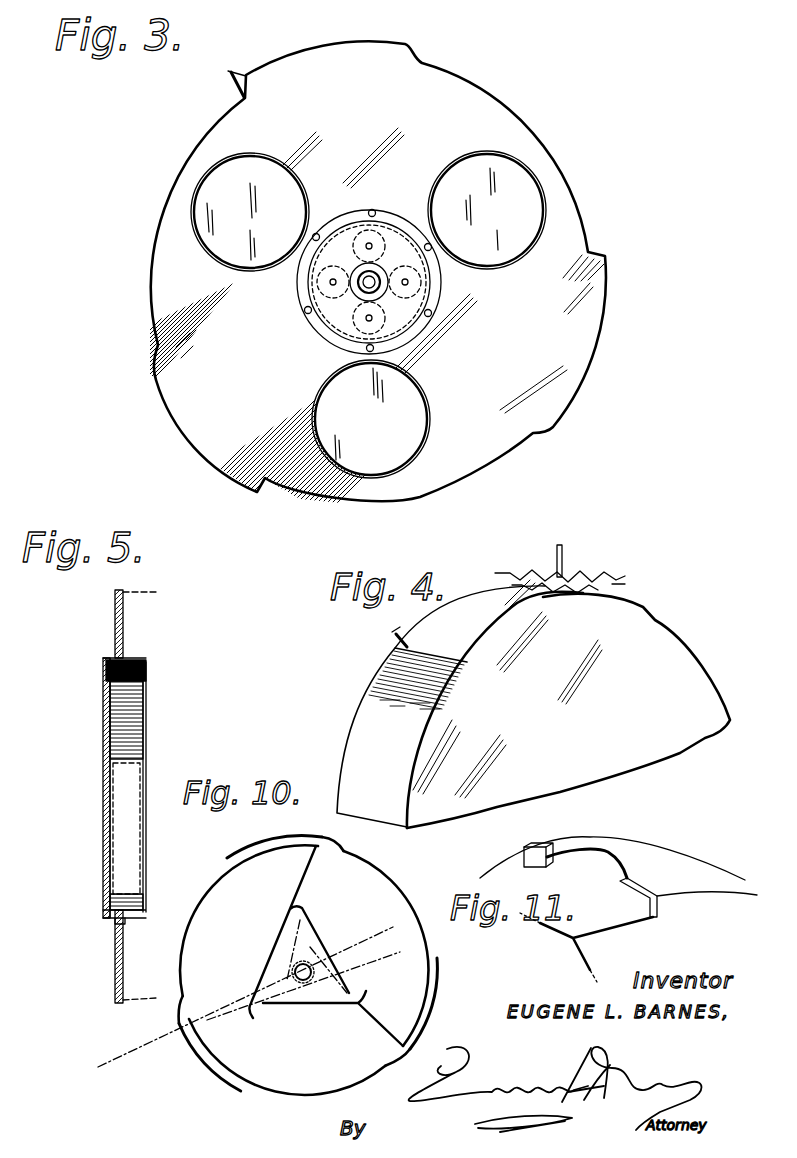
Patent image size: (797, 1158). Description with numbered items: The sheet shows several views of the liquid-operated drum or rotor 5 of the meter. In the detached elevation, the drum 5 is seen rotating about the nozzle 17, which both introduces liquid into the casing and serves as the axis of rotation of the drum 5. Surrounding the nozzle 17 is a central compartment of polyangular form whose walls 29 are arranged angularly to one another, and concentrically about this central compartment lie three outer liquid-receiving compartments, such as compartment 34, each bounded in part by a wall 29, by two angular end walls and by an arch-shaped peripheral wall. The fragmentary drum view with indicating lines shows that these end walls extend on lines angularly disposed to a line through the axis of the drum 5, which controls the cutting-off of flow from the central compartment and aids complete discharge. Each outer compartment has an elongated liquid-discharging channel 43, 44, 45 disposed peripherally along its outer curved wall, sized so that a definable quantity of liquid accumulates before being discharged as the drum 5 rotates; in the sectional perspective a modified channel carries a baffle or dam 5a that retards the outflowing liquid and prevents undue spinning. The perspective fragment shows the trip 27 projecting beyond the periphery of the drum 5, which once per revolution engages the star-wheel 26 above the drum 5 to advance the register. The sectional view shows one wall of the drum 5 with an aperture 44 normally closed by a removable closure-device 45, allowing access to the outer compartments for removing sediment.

In FIG. 3, the drum or rotor 5 is at (353, 280).
In FIG. 5, the drum or rotor 5 is at (113, 630).
In FIG. 4, the drum or rotor 5 is at (533, 704).
In FIG. 10, the drum or rotor 5 is at (304, 966).
In FIG. 11, the drum or rotor 5 is at (618, 909).
In FIG. 11, the baffle or dam 5a is at (548, 860).
In FIG. 10, the nozzle 17 is at (305, 963).
In FIG. 4, the star-wheel 26 is at (589, 570).
In FIG. 3, the trip 27 is at (230, 72).
In FIG. 4, the trip 27 is at (394, 640).
In FIG. 10, the walls 29 is at (267, 973).
In FIG. 10, the liquid-receiving compartment 34 is at (282, 1088).
In FIG. 10, the liquid-discharging channel 43 is at (441, 977).
In FIG. 3, the aperture 44 is at (300, 182).
In FIG. 5, the aperture 44 is at (146, 668).
In FIG. 10, the aperture 44 is at (258, 841).
In FIG. 3, the closure-device 45 is at (368, 314).
In FIG. 5, the closure-device 45 is at (103, 812).
In FIG. 10, the closure-device 45 is at (207, 1075).